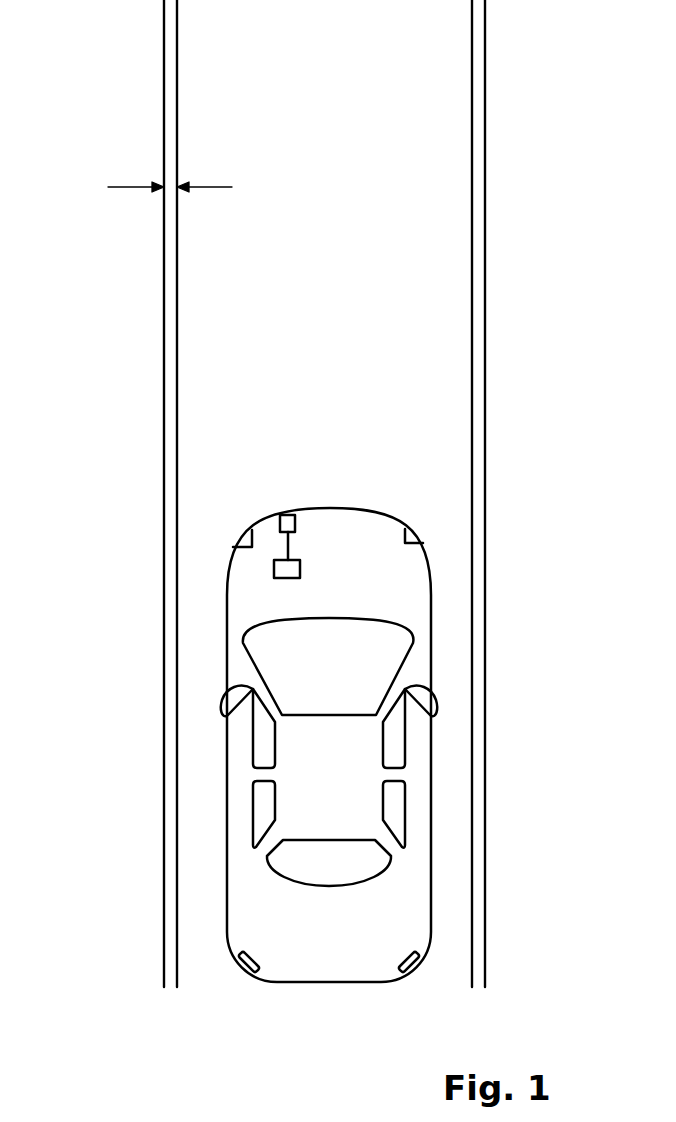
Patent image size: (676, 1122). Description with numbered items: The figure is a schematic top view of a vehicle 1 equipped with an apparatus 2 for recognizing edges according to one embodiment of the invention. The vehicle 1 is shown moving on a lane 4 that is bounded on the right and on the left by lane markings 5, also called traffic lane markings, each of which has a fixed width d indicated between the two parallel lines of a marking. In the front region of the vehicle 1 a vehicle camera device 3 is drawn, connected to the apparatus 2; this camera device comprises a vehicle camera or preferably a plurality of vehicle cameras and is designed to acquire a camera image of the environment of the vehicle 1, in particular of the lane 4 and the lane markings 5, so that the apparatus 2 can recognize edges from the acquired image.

The vehicle 1 is at (405, 587).
The apparatus for recognizing edges 2 is at (273, 568).
The vehicle camera device 3 is at (285, 513).
The lane 4 is at (435, 237).
The lane markings 5 is at (168, 360).
The fixed width d is at (171, 187).